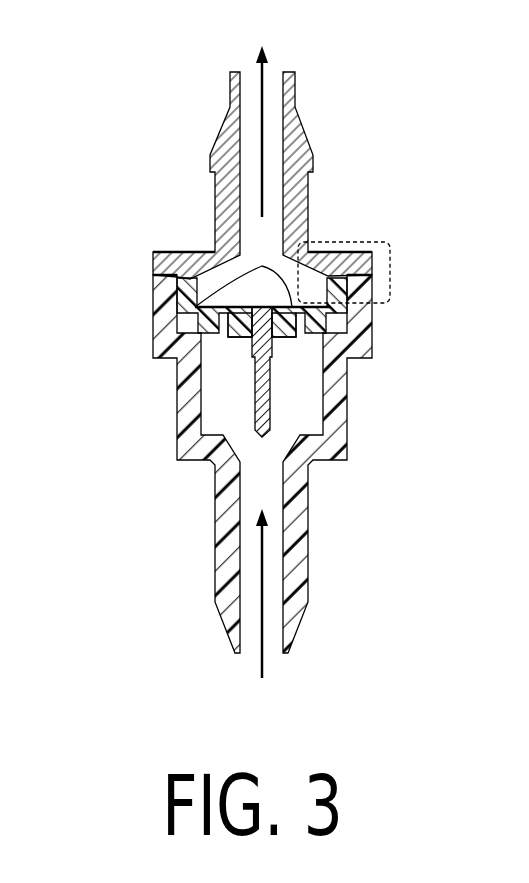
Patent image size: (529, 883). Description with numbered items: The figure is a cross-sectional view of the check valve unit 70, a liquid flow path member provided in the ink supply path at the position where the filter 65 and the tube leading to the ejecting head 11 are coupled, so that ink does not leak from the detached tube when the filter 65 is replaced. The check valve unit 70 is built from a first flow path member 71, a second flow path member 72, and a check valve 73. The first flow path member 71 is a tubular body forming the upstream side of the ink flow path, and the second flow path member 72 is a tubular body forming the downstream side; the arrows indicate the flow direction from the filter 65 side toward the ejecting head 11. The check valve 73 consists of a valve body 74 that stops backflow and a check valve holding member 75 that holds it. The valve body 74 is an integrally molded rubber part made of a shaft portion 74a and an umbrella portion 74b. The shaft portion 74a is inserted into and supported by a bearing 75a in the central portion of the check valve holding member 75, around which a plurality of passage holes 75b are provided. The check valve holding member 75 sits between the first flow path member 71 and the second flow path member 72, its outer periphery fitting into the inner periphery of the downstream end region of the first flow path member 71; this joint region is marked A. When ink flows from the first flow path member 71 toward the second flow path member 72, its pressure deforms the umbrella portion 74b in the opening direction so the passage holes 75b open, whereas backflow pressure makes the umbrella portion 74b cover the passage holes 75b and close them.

The check valve unit 70 is at (134, 100).
The first flow path member 71 is at (367, 342).
The second flow path member 72 is at (303, 196).
The check valve 73 is at (53, 255).
The valve body 74 is at (175, 319).
The shaft portion 74a is at (254, 372).
The umbrella portion 74b is at (258, 265).
The check valve holding member 75 is at (190, 308).
The bearing 75a is at (247, 340).
The passage holes 75b is at (300, 333).
The joining region A is at (392, 267).
The ejecting head 11 is at (261, 117).
The filter 65 is at (261, 611).